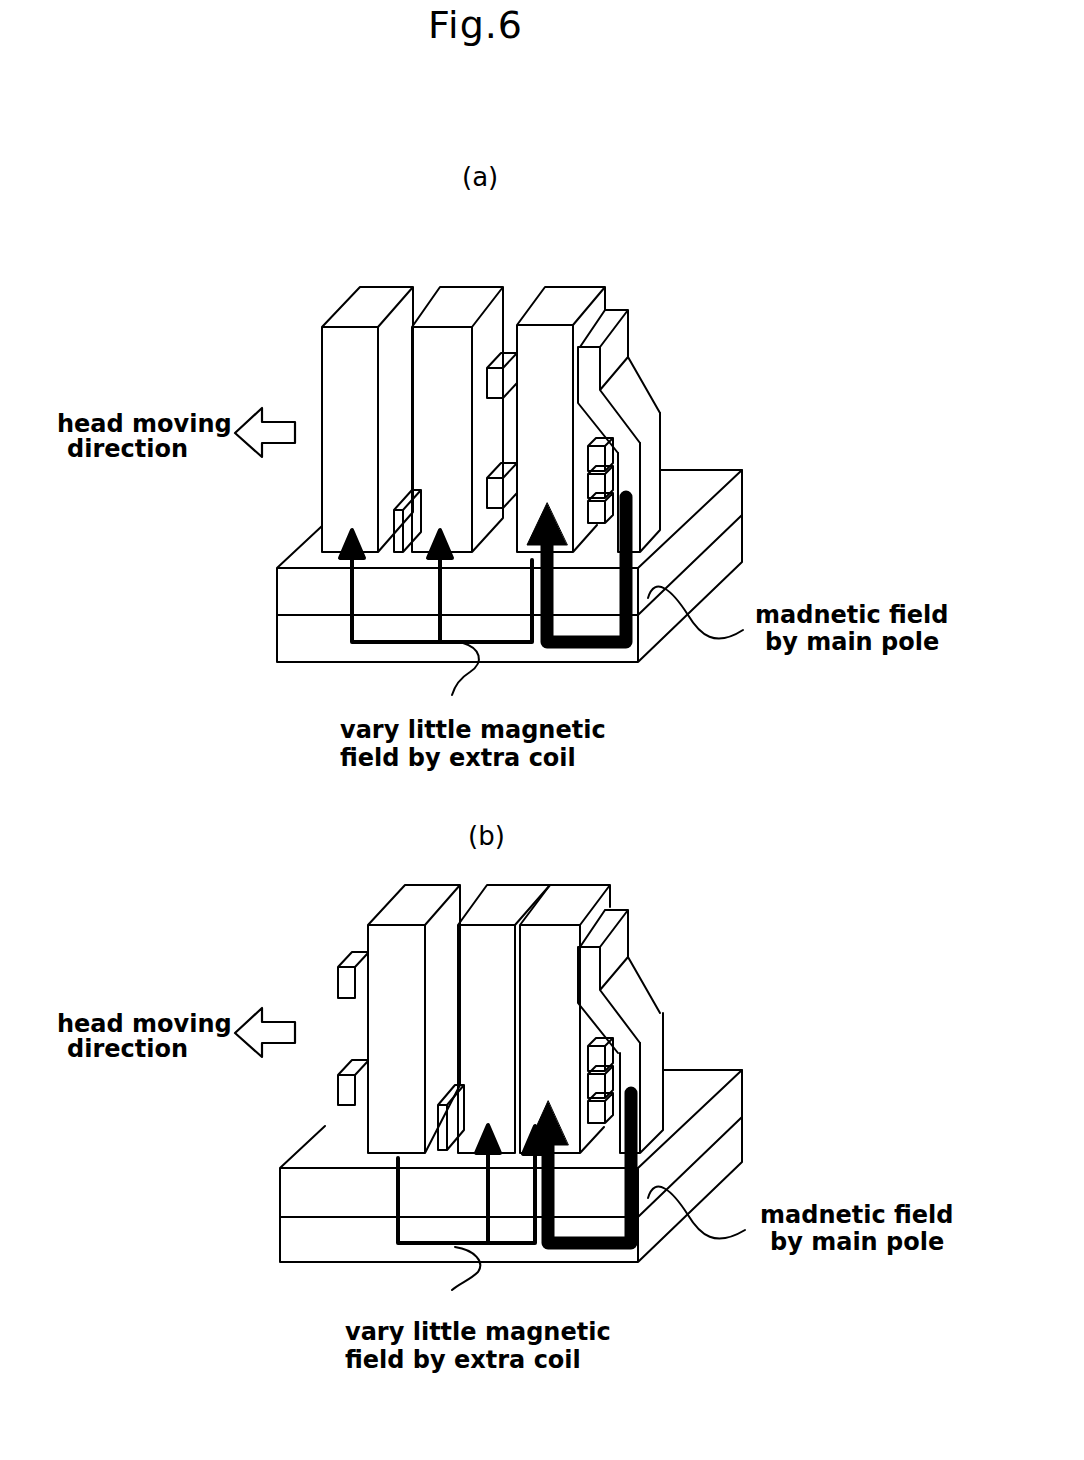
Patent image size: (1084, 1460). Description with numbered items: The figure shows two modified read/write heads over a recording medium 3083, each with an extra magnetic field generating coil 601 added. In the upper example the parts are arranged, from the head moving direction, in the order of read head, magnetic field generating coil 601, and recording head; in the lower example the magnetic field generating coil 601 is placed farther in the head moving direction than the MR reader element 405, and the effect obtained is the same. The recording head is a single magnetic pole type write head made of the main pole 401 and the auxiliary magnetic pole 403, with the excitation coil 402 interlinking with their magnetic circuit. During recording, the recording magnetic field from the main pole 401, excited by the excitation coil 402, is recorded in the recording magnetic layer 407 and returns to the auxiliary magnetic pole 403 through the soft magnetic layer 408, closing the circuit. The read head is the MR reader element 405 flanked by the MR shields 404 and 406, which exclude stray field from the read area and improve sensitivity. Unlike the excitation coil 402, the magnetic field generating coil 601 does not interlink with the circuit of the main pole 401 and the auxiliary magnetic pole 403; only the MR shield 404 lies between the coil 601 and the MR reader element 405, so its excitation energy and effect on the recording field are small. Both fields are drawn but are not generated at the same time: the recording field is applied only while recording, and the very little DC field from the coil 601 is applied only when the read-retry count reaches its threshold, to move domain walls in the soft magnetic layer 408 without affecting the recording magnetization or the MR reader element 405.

The main pole 401 is at (650, 483).
The excitation coil 402 is at (600, 440).
The auxiliary magnetic pole 403 is at (570, 293).
The MR shield 404 is at (440, 308).
The MR reader element 405 is at (380, 545).
The MR shield 406 is at (362, 313).
The recording magnetic layer 407 is at (288, 583).
The soft magnetic layer 408 is at (288, 638).
The recording medium 3083 is at (469, 866).
The magnetic field generating coil 601 is at (493, 378).